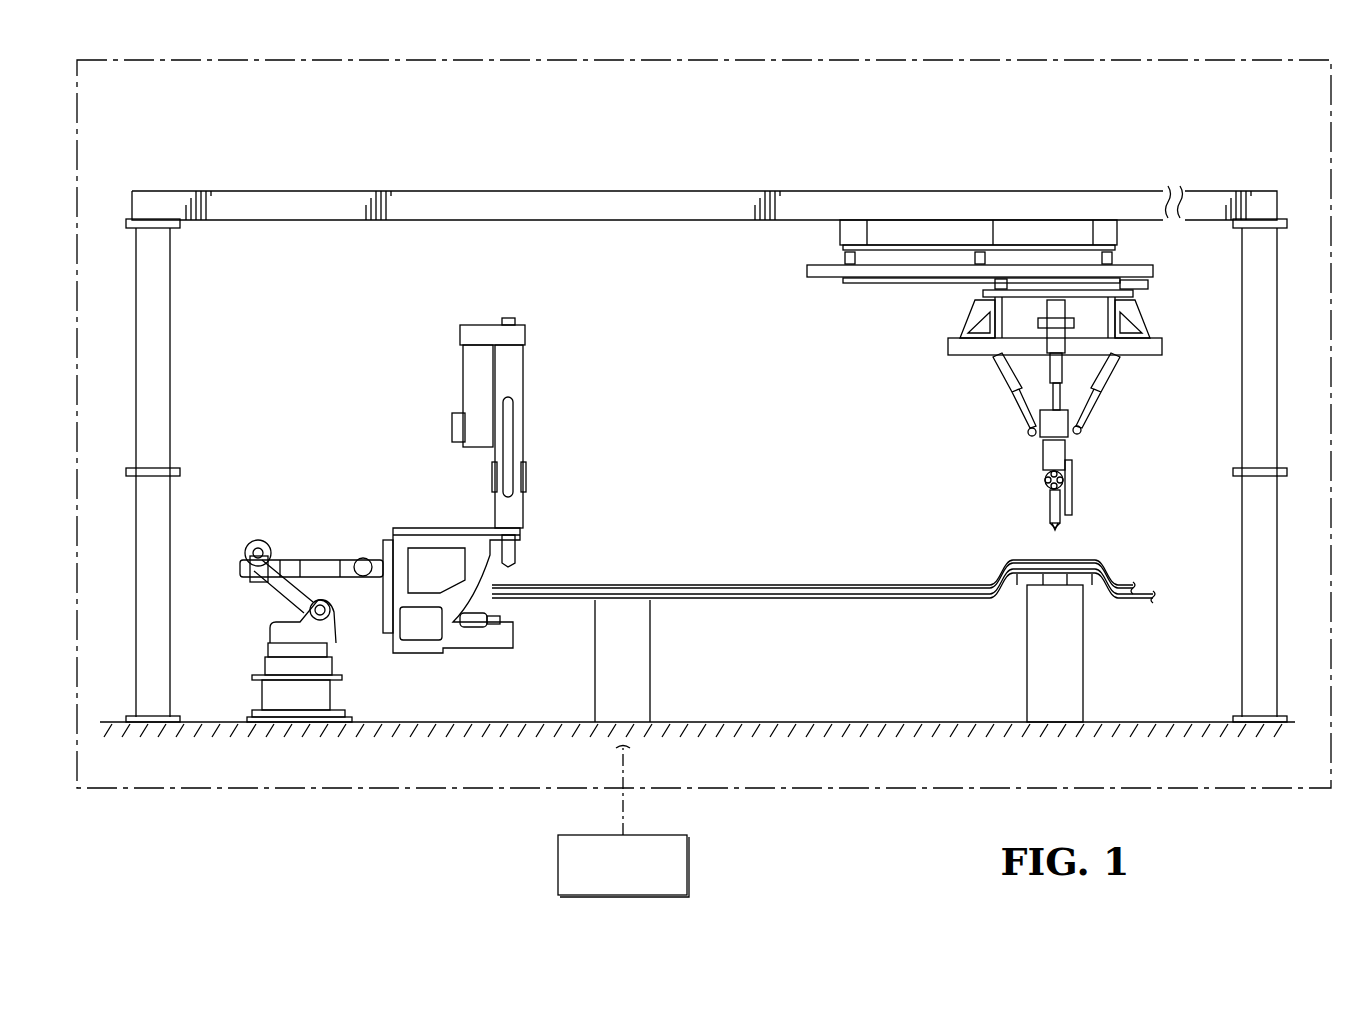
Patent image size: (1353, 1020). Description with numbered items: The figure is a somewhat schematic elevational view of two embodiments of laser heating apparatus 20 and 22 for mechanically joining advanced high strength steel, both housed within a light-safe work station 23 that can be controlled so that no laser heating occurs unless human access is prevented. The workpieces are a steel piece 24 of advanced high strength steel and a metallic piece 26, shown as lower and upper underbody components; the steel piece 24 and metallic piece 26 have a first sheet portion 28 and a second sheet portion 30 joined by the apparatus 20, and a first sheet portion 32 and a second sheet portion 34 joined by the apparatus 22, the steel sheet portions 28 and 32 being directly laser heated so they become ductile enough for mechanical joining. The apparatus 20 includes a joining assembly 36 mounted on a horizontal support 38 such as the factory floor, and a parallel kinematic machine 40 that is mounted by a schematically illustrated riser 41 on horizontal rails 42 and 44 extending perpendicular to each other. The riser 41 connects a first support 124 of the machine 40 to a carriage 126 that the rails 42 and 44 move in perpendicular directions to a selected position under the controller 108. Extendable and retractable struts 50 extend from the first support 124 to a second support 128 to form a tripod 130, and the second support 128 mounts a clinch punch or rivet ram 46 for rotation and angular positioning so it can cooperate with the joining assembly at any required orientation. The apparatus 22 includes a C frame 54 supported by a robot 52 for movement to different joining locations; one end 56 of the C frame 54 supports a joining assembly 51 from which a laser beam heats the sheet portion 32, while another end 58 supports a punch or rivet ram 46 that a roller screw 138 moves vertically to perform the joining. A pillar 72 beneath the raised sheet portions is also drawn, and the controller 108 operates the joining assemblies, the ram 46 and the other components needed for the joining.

The laser heating apparatus 20 is at (912, 487).
The laser heating apparatus 22 is at (560, 520).
The light-safe work station 23 is at (824, 790).
The steel piece 24 is at (715, 600).
The metallic piece 26 is at (703, 584).
The first sheet portion 28 is at (1027, 583).
The second sheet portion 30 is at (1070, 560).
The first sheet portion 32 is at (515, 600).
The second sheet portion 34 is at (515, 578).
The joining assembly 36 is at (1055, 600).
The horizontal support 38 is at (843, 716).
The parallel kinematic machine 40 is at (966, 380).
The riser 41 is at (1027, 307).
The horizontal rail 42 is at (975, 260).
The horizontal rail 44 is at (958, 285).
The clinch punch or rivet ram 46 is at (1047, 526).
The struts 50 is at (1005, 380).
The joining assembly 51 is at (533, 608).
The robot 52 is at (305, 535).
The C frame 54 is at (388, 538).
The one end 56 is at (500, 650).
The another end 58 is at (498, 545).
The support pillar 72 is at (1022, 668).
The controller 108 is at (623, 822).
The first support 124 is at (1165, 350).
The carriage 126 is at (1130, 293).
The second support 128 is at (1072, 455).
The tripod 130 is at (1098, 428).
The roller screw 138 is at (535, 410).